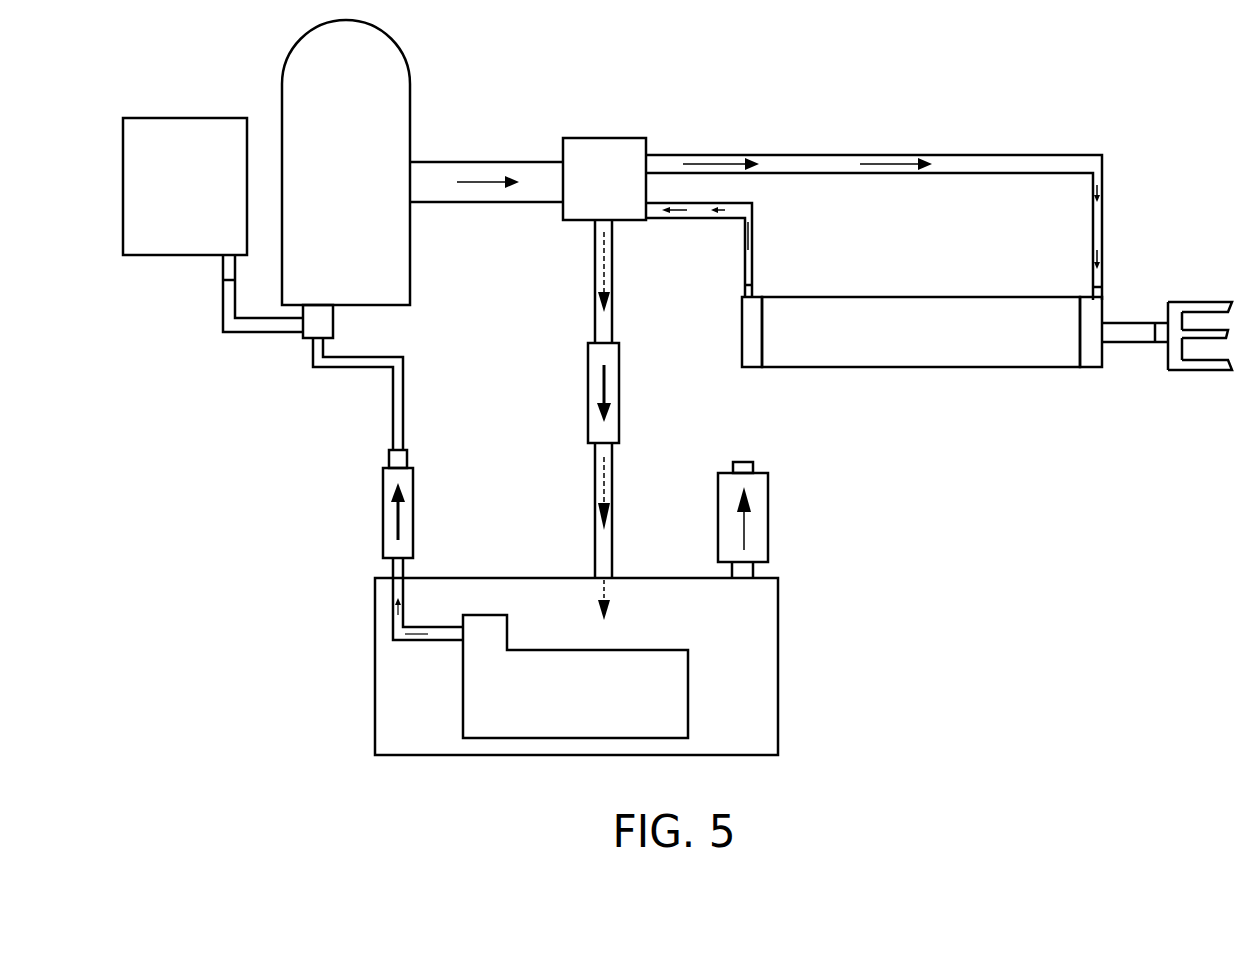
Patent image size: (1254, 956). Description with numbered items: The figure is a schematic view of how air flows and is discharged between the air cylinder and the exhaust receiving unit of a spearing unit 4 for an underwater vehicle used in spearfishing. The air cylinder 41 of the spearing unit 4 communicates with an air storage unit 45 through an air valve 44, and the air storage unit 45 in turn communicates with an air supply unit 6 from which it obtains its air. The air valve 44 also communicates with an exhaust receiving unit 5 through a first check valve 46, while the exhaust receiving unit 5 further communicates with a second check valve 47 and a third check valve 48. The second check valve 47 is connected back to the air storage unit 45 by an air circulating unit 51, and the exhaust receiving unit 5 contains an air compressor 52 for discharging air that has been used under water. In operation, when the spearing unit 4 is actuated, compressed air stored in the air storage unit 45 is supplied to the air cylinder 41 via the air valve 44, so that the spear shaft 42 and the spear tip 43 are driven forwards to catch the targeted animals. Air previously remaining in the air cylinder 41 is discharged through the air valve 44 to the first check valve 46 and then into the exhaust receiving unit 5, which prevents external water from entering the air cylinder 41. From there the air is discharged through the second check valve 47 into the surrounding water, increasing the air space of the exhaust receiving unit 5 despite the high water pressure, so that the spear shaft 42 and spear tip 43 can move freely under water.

The spearing unit 4 is at (987, 423).
The air cylinder 41 is at (947, 340).
The spear shaft 42 is at (1128, 333).
The spear tip 43 is at (1170, 375).
The air valve 44 is at (588, 160).
The air storage unit 45 is at (338, 92).
The first check valve 46 is at (622, 378).
The second check valve 47 is at (413, 503).
The third check valve 48 is at (768, 523).
The exhaust receiving unit 5 is at (778, 628).
The air circulating unit 51 is at (397, 387).
The air compressor 52 is at (627, 708).
The air supply unit 6 is at (150, 142).